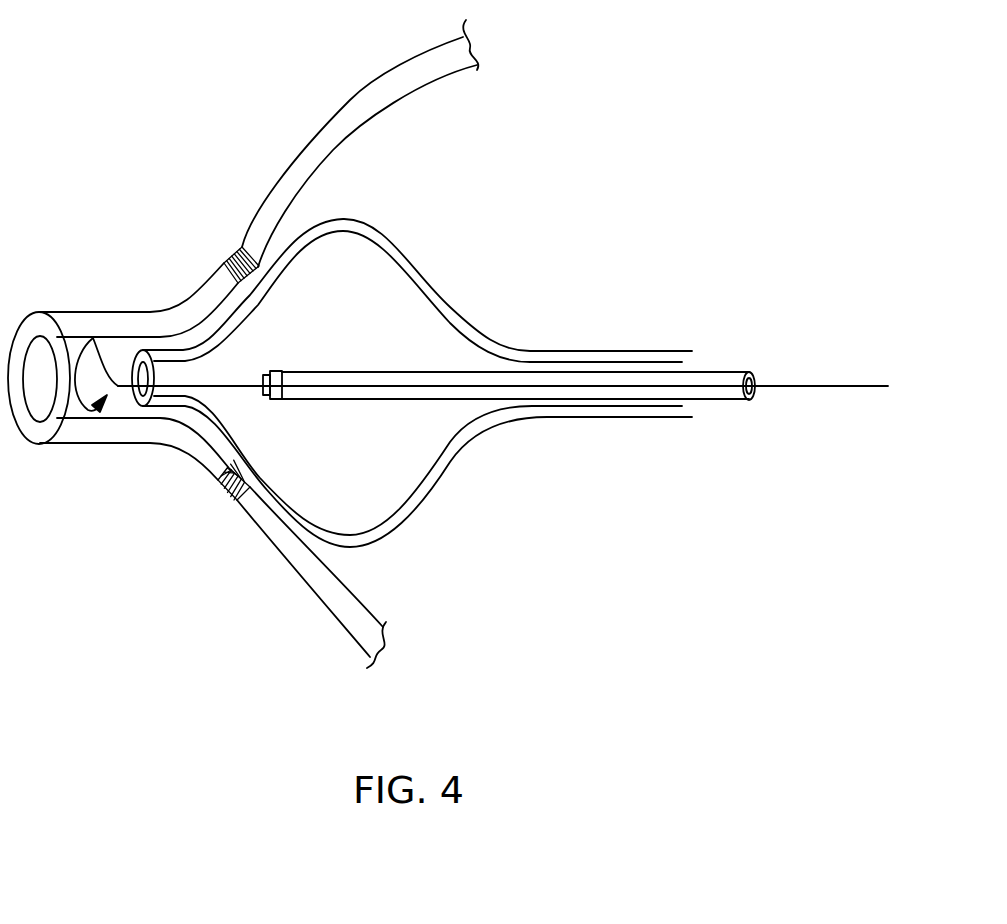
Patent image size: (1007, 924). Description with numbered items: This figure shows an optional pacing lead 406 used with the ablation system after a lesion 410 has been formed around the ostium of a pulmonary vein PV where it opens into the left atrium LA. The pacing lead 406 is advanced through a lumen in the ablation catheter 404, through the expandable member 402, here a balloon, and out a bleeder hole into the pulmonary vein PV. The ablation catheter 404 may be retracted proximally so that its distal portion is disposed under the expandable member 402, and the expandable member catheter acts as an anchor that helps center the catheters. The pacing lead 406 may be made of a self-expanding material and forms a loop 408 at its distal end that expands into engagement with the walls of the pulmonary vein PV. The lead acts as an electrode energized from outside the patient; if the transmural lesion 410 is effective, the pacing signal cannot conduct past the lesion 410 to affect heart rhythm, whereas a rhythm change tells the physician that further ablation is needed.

The expandable member 402 is at (565, 350).
The ablation catheter 404 is at (395, 400).
The pacing lead 406 is at (240, 386).
The loop 408 is at (93, 338).
The lesion 410 is at (237, 262).
The left atrium LA is at (400, 115).
The pulmonary vein PV is at (110, 430).